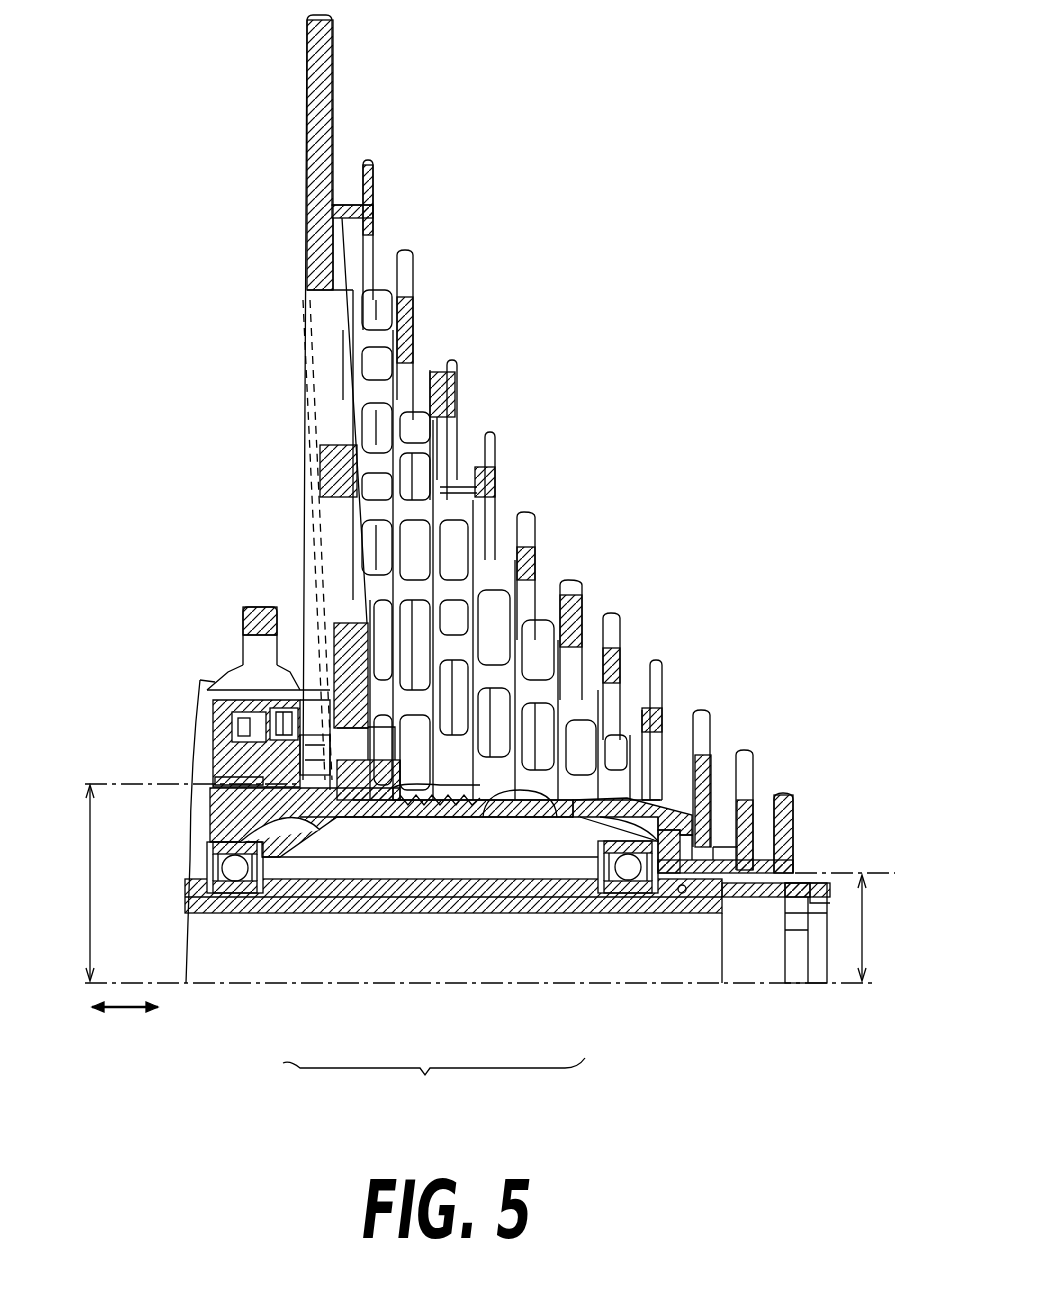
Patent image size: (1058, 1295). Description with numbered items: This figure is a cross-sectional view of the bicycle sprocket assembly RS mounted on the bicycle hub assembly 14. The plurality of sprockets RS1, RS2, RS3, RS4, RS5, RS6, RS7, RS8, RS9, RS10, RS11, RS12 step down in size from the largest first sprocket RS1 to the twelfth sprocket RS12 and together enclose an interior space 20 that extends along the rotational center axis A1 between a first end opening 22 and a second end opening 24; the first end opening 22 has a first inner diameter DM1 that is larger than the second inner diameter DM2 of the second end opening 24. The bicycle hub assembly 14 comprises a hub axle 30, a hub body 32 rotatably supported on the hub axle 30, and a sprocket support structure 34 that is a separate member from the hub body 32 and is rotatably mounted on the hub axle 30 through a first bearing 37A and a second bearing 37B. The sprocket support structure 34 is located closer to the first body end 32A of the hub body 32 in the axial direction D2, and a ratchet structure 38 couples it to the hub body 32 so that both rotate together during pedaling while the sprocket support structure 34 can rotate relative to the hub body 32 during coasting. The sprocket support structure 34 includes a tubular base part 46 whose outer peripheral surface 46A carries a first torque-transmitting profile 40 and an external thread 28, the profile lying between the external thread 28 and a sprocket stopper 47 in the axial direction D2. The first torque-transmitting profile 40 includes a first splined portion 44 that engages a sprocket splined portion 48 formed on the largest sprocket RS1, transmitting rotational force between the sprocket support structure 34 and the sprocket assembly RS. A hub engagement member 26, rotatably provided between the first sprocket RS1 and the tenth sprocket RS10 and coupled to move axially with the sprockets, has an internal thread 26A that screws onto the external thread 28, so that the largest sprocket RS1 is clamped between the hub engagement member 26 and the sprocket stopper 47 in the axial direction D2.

The bicycle sprocket assembly RS is at (592, 282).
The first sprocket RS1 is at (308, 63).
The second sprocket RS2 is at (366, 160).
The third sprocket RS3 is at (409, 252).
The fourth sprocket RS4 is at (453, 362).
The fifth sprocket RS5 is at (491, 432).
The sixth sprocket RS6 is at (530, 512).
The seventh sprocket RS7 is at (572, 580).
The eighth sprocket RS8 is at (613, 613).
The ninth sprocket RS9 is at (656, 660).
The tenth sprocket RS10 is at (700, 710).
The eleventh sprocket RS11 is at (742, 750).
The twelfth sprocket RS12 is at (783, 793).
The bicycle hub assembly 14 is at (168, 615).
The interior space 20 is at (378, 430).
The first end opening 22 is at (328, 830).
The second end opening 24 is at (770, 872).
The hub engagement member 26 is at (377, 760).
The internal thread 26A is at (483, 800).
The external thread 28 is at (428, 805).
The hub axle 30 is at (796, 988).
The hub body 32 is at (220, 624).
The first body end 32A is at (258, 614).
The sprocket support structure 34 is at (434, 1081).
The first bearing 37A is at (243, 896).
The second bearing 37B is at (624, 896).
The ratchet structure 38 is at (240, 814).
The first torque-transmitting profile 40 is at (372, 800).
The first splined portion 44 is at (412, 800).
The base part 46 is at (522, 815).
The outer peripheral surface 46A is at (556, 820).
The sprocket stopper 47 is at (306, 862).
The sprocket splined portion 48 is at (228, 724).
The rotational center axis A1 is at (130, 985).
The axial direction D2 is at (126, 1010).
The first inner diameter DM1 is at (88, 878).
The second inner diameter DM2 is at (866, 925).